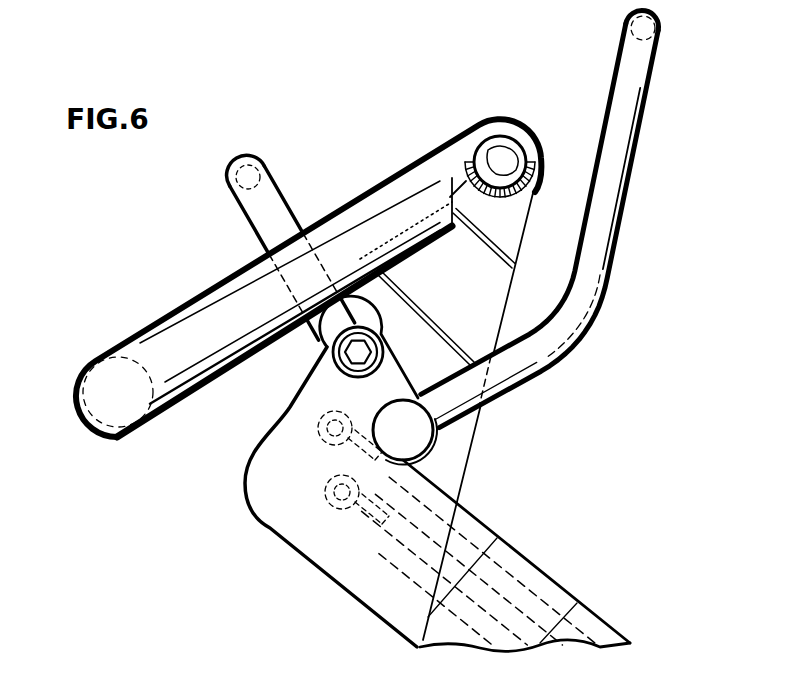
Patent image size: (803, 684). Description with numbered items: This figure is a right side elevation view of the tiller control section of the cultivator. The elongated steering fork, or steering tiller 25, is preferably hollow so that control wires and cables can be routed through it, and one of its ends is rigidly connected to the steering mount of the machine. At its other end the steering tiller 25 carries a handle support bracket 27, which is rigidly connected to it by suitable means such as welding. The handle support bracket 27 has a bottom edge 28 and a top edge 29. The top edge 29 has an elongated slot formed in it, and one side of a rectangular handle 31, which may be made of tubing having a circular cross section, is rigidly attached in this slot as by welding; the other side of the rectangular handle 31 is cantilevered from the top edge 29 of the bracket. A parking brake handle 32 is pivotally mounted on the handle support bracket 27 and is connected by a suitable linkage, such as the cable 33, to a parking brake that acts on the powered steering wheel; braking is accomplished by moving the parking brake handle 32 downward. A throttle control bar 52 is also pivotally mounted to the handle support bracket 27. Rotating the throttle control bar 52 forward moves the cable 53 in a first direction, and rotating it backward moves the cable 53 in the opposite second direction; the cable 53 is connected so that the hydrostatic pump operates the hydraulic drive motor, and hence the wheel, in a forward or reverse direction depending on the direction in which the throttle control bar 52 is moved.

The steering tiller 25 is at (519, 552).
The handle support bracket 27 is at (478, 287).
The bottom edge 28 is at (267, 528).
The top edge 29 is at (533, 194).
The rectangular handle 31 is at (180, 318).
The parking brake handle 32 is at (651, 77).
The cable 33 is at (408, 555).
The throttle control bar 52 is at (273, 171).
The cable 53 is at (539, 588).